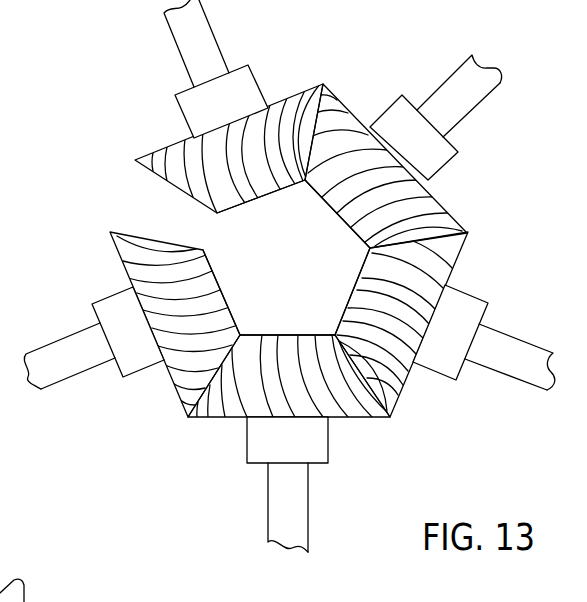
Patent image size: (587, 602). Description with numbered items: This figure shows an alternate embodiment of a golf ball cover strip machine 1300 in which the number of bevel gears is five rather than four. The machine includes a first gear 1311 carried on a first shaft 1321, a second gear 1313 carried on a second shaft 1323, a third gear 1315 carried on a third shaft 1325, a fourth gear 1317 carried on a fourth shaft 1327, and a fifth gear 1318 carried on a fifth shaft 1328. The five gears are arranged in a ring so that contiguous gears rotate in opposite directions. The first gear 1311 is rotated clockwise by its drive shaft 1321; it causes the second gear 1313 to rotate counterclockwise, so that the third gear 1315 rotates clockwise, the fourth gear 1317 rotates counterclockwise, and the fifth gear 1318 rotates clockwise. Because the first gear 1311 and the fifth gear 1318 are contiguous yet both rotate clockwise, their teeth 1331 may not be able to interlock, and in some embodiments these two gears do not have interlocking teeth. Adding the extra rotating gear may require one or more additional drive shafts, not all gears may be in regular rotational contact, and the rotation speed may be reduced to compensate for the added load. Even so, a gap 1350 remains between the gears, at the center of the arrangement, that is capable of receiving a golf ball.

The cover strip machine 1300 is at (92, 119).
The first gear 1311 is at (222, 128).
The second gear 1313 is at (441, 199).
The third gear 1315 is at (406, 381).
The fourth gear 1317 is at (222, 420).
The fifth gear 1318 is at (119, 269).
The first shaft 1321 is at (179, 49).
The second shaft 1323 is at (471, 115).
The third shaft 1325 is at (507, 333).
The fourth shaft 1327 is at (308, 490).
The fifth shaft 1328 is at (75, 378).
The teeth 1331 is at (183, 150).
The gap 1350 is at (275, 262).